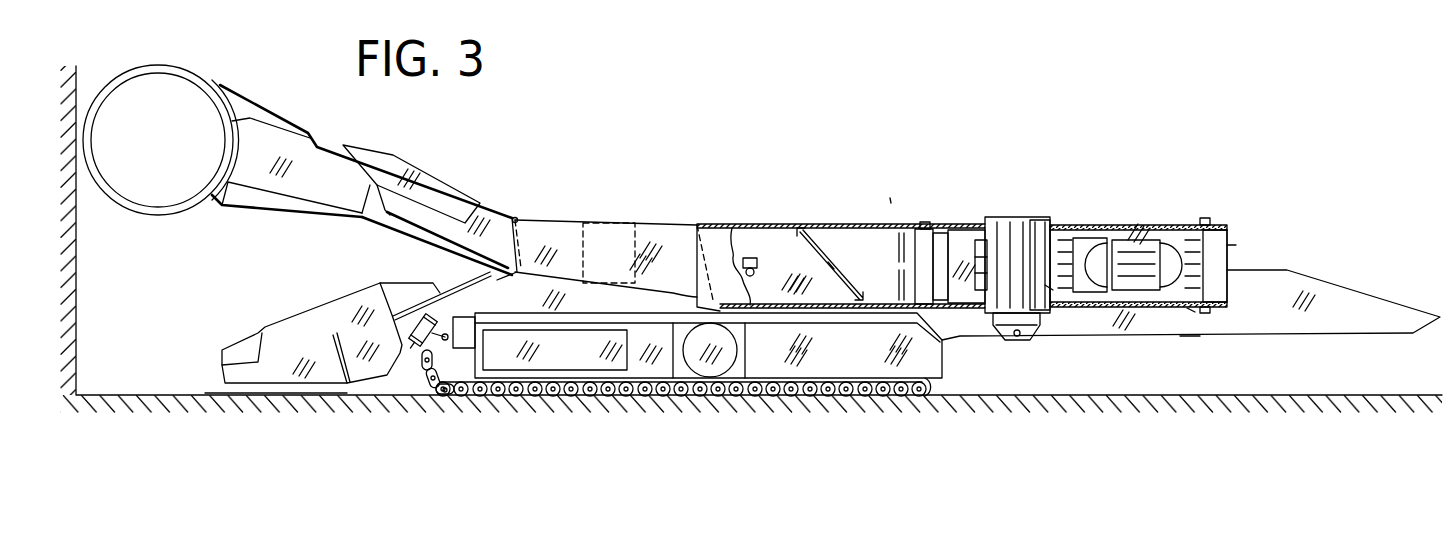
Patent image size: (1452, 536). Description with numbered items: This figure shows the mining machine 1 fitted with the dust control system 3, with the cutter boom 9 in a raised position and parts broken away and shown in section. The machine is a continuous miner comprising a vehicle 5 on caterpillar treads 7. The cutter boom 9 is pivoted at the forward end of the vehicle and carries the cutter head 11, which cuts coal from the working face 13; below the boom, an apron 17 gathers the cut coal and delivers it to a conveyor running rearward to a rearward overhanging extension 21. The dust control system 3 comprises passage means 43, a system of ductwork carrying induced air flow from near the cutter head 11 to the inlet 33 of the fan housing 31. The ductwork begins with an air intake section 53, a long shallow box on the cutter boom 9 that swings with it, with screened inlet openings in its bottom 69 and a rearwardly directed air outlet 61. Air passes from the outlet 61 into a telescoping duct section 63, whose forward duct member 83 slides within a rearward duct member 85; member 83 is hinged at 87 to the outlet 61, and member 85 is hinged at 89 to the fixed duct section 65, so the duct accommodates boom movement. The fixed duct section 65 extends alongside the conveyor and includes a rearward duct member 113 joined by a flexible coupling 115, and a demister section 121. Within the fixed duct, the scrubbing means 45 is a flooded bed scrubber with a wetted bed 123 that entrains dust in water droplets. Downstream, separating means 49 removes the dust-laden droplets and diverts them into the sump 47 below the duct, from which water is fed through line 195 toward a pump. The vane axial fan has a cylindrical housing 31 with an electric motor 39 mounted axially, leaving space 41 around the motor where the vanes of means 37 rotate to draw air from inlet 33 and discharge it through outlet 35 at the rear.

The mining machine 1 is at (520, 173).
The dust control system 3 is at (891, 196).
The vehicle 5 is at (473, 358).
The caterpillar treads 7 is at (553, 396).
The cutter boom 9 is at (282, 115).
The cutter head 11 is at (147, 213).
The working face 13 is at (78, 337).
The apron 17 is at (292, 383).
The rearward overhanging extension 21 is at (1380, 297).
The fan housing 31 is at (1187, 308).
The inlet 33 is at (1058, 222).
The outlet 35 is at (1228, 242).
The means for causing a flow of air 37 is at (1100, 240).
The electric motor 39 is at (1138, 260).
The space 41 is at (1180, 336).
The passage means 43 is at (729, 213).
The scrubbing means 45 is at (826, 245).
The sump 47 is at (1015, 340).
The separating means 49 is at (1053, 290).
The air intake section 53 is at (452, 130).
The air outlet 61 is at (485, 238).
The telescoping duct section 63 is at (626, 205).
The fixed duct section 65 is at (800, 223).
The bottom 69 is at (393, 227).
The forward duct member 83 is at (565, 235).
The rearward duct member 85 is at (666, 222).
The hinge 87 is at (516, 220).
The hinge 89 is at (698, 225).
The rearward duct member 113 is at (968, 225).
The flexible coupling 115 is at (930, 225).
The demister section 121 is at (1012, 217).
The bed 123 is at (841, 262).
The line 195 is at (1002, 338).